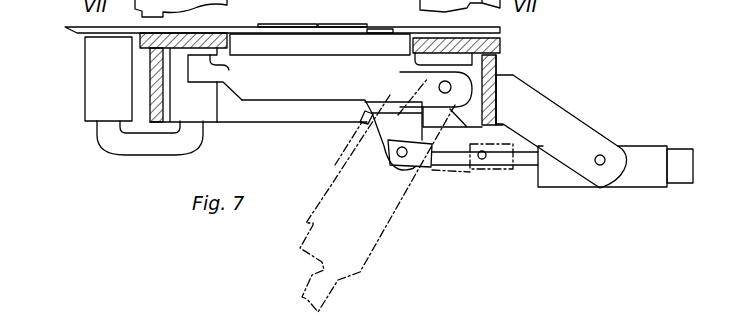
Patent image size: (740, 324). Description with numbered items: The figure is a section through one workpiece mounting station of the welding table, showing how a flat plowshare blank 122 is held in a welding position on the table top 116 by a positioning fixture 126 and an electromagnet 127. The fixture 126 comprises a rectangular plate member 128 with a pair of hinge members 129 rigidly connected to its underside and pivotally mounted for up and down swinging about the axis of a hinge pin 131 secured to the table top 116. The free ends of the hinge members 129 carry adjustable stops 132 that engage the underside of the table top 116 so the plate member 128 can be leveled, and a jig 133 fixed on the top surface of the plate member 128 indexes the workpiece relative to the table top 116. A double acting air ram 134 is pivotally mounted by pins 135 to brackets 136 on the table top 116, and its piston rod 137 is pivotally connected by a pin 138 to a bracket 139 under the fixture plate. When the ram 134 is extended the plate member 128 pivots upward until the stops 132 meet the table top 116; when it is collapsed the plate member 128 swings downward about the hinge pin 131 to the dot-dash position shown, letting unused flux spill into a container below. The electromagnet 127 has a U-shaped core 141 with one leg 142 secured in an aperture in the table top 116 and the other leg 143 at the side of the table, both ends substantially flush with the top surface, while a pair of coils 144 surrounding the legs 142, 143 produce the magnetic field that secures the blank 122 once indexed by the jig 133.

The table top 116 is at (548, 49).
The plowshare blank 122 is at (74, 34).
The positioning fixture 126 is at (366, 27).
The electromagnet 127 is at (100, 157).
The plate member 128 is at (252, 19).
The hinge members 129 is at (313, 100).
The hinge pin 131 is at (439, 85).
The adjustable stops 132 is at (221, 66).
The jig 133 is at (308, 27).
The double acting air ram 134 is at (642, 145).
The pins 135 is at (606, 162).
The brackets 136 is at (567, 101).
The piston rod 137 is at (527, 167).
The pin 138 is at (402, 172).
The bracket 139 is at (382, 147).
The U-shaped core 141 is at (155, 148).
The leg 142 is at (202, 122).
The leg 143 is at (97, 123).
The coils 144 is at (88, 80).